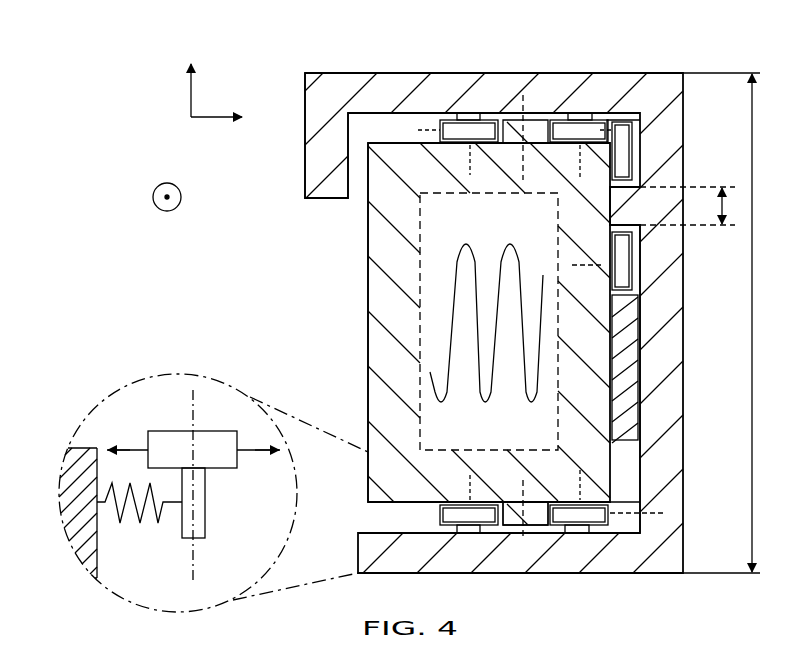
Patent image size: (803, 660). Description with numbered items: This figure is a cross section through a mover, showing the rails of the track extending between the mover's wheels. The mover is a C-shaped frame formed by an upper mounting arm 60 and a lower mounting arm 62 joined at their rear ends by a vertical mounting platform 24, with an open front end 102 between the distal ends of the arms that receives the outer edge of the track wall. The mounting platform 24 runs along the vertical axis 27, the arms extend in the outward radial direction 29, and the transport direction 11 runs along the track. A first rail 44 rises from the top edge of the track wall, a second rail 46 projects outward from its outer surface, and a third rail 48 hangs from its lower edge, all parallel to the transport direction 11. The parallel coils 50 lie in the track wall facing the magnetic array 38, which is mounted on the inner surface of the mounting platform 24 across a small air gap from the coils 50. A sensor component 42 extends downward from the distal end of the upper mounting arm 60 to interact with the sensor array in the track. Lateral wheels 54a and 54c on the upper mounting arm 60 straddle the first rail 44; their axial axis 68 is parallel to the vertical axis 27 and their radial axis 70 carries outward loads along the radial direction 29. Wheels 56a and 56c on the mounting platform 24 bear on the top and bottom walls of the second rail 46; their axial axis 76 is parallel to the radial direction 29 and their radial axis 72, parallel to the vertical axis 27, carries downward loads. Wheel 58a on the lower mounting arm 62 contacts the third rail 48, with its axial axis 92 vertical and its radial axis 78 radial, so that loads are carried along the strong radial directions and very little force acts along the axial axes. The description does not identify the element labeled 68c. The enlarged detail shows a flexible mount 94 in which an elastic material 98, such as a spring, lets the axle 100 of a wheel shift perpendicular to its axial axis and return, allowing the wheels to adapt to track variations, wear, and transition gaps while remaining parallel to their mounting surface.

The transport direction 11 is at (158, 187).
The mounting platform 24 is at (665, 412).
The vertical axis 27 is at (191, 95).
The outward radial direction 29 is at (213, 118).
The magnetic array 38 is at (628, 365).
The sensor component 42 is at (318, 157).
The first rail 44 is at (525, 128).
The second rail 46 is at (620, 205).
The third rail 48 is at (525, 515).
The coils 50 is at (452, 310).
The lateral wheel 54a is at (463, 128).
The lateral wheel 54c is at (578, 128).
The lateral wheel 56a is at (628, 150).
The lateral wheel 56c is at (625, 258).
The lateral wheel 58a is at (452, 510).
The upper mounting arm 60 is at (372, 86).
The lower mounting arm 62 is at (535, 555).
The axial axis 68 is at (462, 152).
The lower sensor 68c is at (575, 515).
The radial axis 70 is at (420, 128).
The radial axis 72 is at (620, 322).
The axial axis 76 is at (585, 268).
The radial axis 78 is at (623, 510).
The axial axis 92 is at (588, 474).
The flexible mount 94 is at (105, 391).
The elastic material 98 is at (122, 527).
The axle 100 is at (182, 520).
The open front end 102 is at (316, 252).